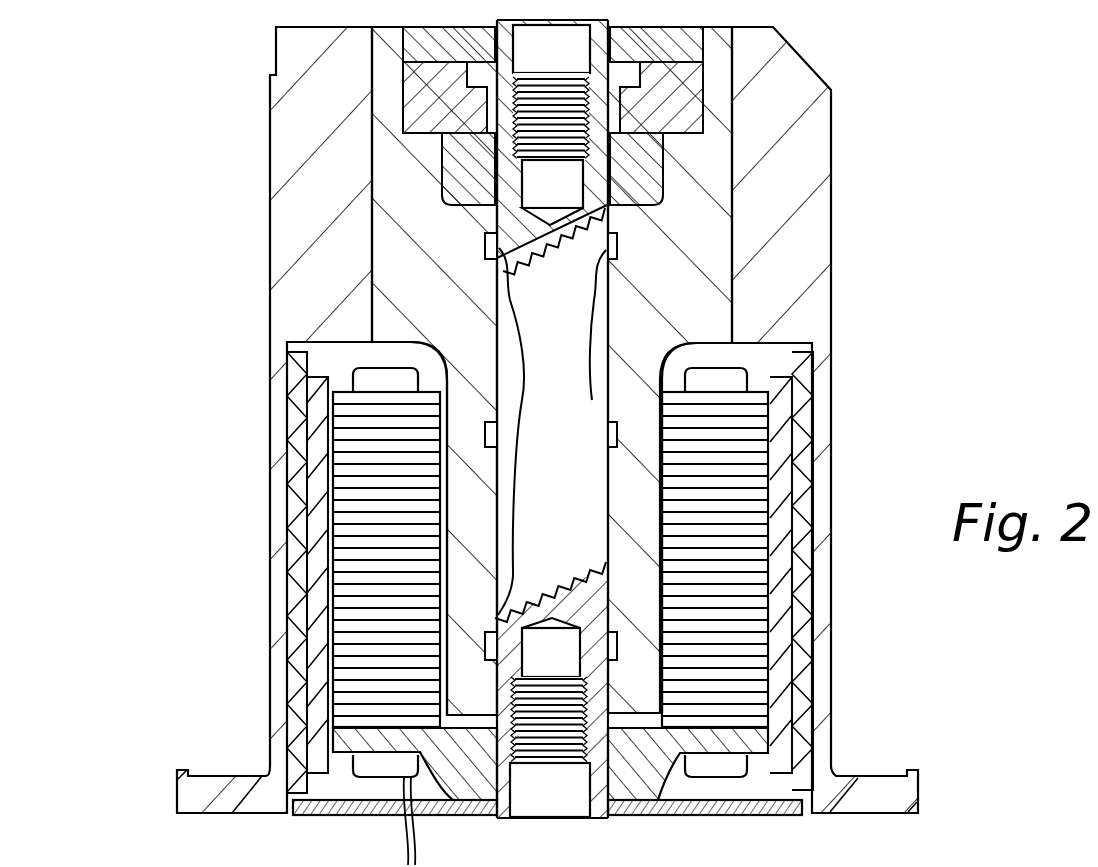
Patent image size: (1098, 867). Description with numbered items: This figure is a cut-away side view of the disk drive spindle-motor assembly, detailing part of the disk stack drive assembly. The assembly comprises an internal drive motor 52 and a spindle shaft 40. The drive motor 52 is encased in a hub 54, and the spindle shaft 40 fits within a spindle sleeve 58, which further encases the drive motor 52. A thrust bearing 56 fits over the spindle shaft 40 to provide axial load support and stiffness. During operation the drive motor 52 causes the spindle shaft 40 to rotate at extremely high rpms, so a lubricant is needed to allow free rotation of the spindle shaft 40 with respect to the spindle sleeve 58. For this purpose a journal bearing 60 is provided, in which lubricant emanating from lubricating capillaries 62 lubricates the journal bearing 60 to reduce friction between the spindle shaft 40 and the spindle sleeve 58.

The spindle shaft 40 is at (530, 330).
The drive motor 52 is at (387, 435).
The hub 54 is at (337, 110).
The thrust bearing 56 is at (640, 167).
The spindle sleeve 58 is at (640, 238).
The journal bearing 60 is at (608, 315).
The lubricating capillaries 62 is at (612, 437).